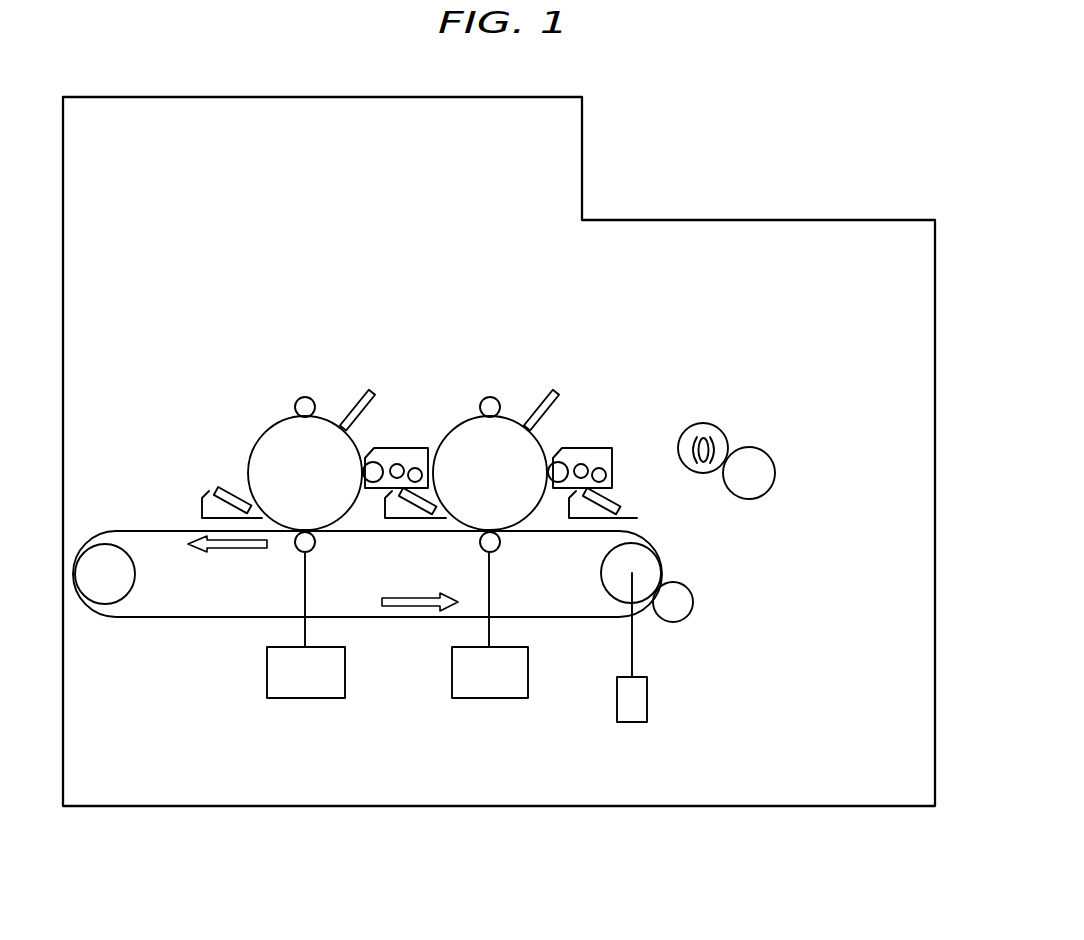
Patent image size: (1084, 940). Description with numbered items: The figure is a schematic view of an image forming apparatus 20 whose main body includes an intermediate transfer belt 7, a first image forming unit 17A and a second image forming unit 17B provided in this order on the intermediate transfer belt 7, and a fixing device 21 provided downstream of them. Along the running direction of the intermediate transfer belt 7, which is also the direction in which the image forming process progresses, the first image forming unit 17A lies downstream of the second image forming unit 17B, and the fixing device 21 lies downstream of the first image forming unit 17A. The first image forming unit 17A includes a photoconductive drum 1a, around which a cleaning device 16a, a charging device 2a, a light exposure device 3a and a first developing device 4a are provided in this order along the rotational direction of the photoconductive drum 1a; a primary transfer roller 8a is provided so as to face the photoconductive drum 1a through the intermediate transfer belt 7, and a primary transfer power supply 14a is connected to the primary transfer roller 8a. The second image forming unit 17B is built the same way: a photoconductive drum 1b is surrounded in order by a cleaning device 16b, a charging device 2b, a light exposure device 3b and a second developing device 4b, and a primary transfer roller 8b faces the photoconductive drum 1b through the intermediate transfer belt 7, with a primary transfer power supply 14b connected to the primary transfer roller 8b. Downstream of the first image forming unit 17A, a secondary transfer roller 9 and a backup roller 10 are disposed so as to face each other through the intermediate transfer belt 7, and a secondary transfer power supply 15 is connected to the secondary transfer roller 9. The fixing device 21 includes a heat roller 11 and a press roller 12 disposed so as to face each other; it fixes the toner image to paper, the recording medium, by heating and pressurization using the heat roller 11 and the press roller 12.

The photoconductive drum 1a is at (322, 437).
The photoconductive drum 1b is at (505, 437).
The charging device 2a is at (302, 397).
The charging device 2b is at (488, 397).
The light exposure device 3a is at (361, 394).
The light exposure device 3b is at (545, 394).
The first developing device 4a is at (400, 448).
The second developing device 4b is at (583, 448).
The intermediate transfer belt 7 is at (562, 618).
The primary transfer roller 8a is at (308, 544).
The primary transfer roller 8b is at (493, 544).
The secondary transfer roller 9 is at (638, 556).
The backup roller 10 is at (682, 608).
The heat roller 11 is at (715, 422).
The press roller 12 is at (790, 464).
The primary transfer power supply 14a is at (305, 700).
The primary transfer power supply 14b is at (489, 700).
The secondary transfer power supply 15 is at (632, 723).
The cleaning device 16a is at (232, 488).
The cleaning device 16b is at (428, 498).
The first image forming unit 17A is at (314, 476).
The second image forming unit 17B is at (511, 476).
The image forming apparatus 20 is at (695, 137).
The fixing device 21 is at (793, 443).